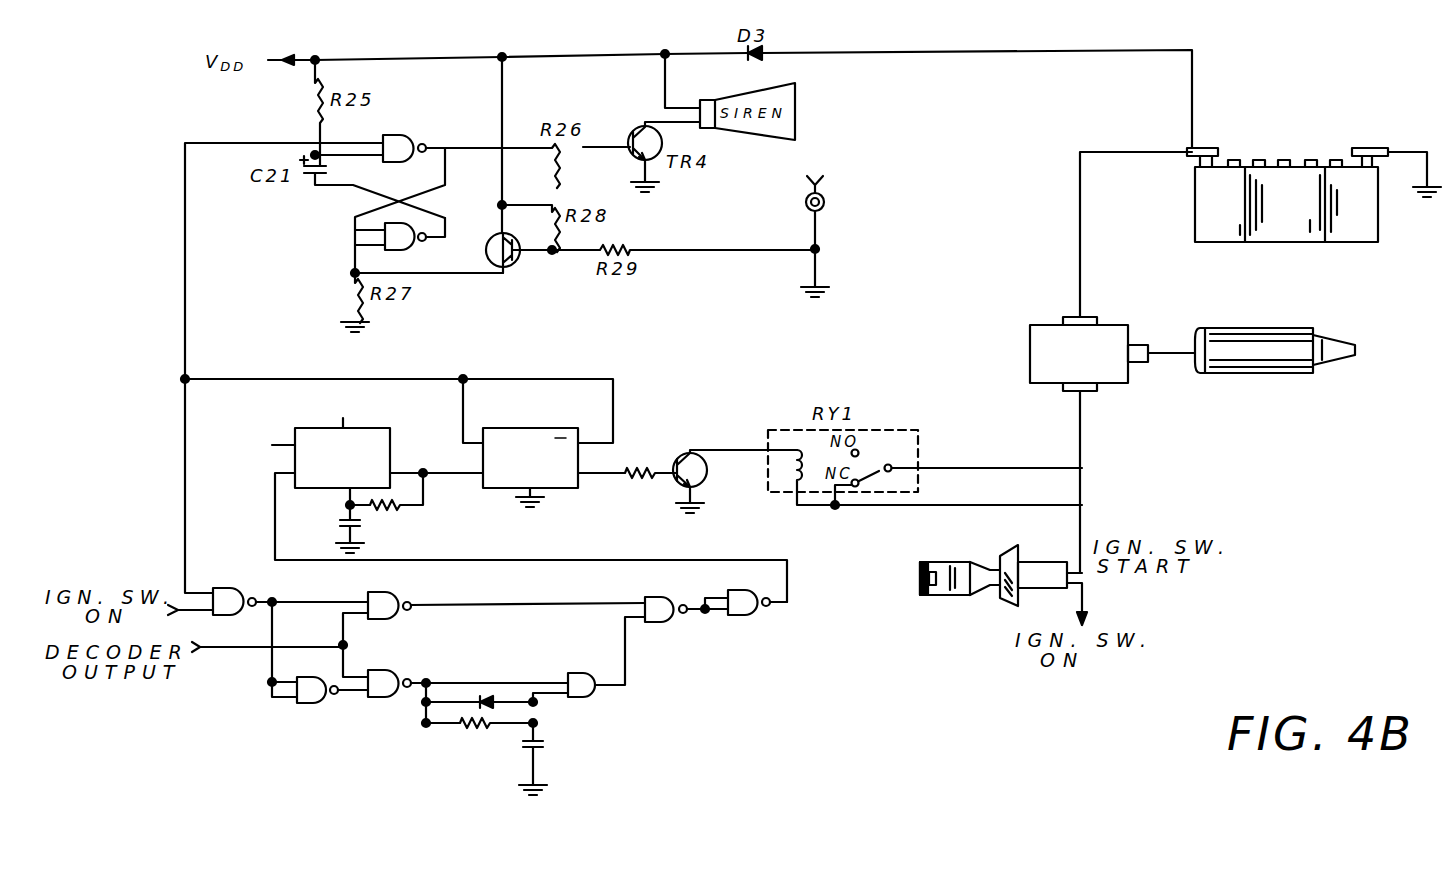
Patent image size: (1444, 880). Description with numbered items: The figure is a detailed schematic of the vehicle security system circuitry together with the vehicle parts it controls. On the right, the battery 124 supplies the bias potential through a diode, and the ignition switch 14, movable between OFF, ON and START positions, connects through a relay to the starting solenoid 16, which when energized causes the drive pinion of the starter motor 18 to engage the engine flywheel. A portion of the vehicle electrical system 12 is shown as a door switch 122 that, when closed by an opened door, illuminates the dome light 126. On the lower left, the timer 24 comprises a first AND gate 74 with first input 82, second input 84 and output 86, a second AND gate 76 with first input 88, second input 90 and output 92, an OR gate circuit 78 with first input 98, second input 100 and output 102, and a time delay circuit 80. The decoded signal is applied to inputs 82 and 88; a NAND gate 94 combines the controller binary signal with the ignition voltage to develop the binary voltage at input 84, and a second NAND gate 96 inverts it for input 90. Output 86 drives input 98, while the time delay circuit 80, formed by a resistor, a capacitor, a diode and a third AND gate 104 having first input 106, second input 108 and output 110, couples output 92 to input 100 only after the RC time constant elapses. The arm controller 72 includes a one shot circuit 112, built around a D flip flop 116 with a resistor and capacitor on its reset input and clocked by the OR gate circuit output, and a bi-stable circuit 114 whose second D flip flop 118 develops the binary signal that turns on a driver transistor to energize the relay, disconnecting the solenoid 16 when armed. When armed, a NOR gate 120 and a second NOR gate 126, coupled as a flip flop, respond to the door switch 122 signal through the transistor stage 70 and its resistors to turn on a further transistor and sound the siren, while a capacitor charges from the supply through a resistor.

The electrical system portion 12 is at (853, 190).
The ignition switch 14 is at (1005, 600).
The starting solenoid 16 is at (1041, 325).
The starter motor 18 is at (1278, 328).
The timer 24 is at (672, 726).
The transistor switch TR5 70 is at (512, 283).
The arm controller 72 is at (652, 428).
The first AND gate 74 is at (398, 596).
The second AND gate 76 is at (380, 700).
The OR gate circuit 78 is at (772, 634).
The time delay circuit 80 is at (425, 745).
The first input of first AND gate 82 is at (338, 622).
The second input of first AND gate 84 is at (345, 591).
The output of first AND gate 86 is at (410, 606).
The first input of second AND gate 88 is at (353, 682).
The second input of second AND gate 90 is at (345, 694).
The output of second AND gate 92 is at (413, 677).
The NAND gate 94 is at (228, 588).
The second NAND gate 96 is at (300, 703).
The first input of OR gate circuit 98 is at (641, 600).
The second input of OR gate circuit 100 is at (627, 624).
The output of OR gate circuit 102 is at (790, 605).
The third AND gate 104 is at (600, 694).
The first input of third AND gate 106 is at (537, 680).
The second input of third AND gate 108 is at (551, 696).
The output of third AND gate 110 is at (600, 680).
The one shot circuit 112 is at (352, 472).
The bi-stable circuit 114 is at (506, 500).
The D flip flop 116 is at (342, 440).
The second D flip flop 118 is at (530, 450).
The NOR gate 120 is at (418, 136).
The door switch 122 is at (823, 282).
The battery 124 is at (1282, 230).
The dome light / second NOR gate 126 is at (402, 252).